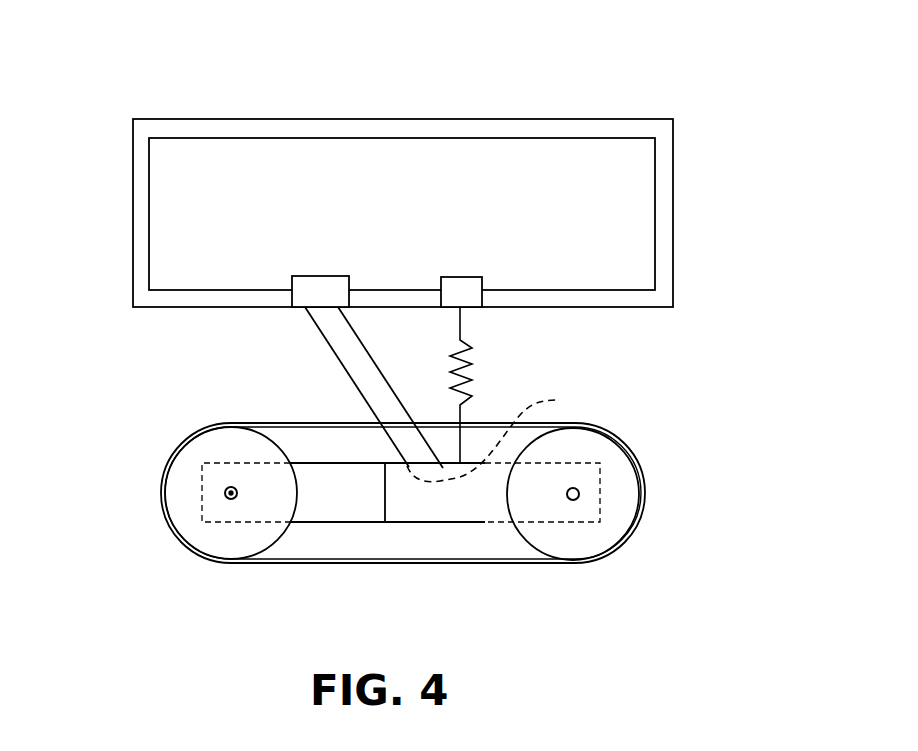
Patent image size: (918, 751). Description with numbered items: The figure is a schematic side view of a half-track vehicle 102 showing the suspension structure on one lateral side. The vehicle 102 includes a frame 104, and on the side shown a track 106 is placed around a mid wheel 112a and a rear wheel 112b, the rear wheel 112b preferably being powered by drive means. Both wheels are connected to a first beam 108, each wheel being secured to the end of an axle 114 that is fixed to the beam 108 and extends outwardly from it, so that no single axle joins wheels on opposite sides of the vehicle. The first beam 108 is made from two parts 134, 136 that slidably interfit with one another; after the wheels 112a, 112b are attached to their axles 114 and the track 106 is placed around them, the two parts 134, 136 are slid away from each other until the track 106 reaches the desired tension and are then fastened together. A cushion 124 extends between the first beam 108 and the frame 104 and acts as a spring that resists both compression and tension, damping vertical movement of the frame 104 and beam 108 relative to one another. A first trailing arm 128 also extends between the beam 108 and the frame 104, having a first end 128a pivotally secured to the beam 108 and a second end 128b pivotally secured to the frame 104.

The half-track vehicle 102 is at (463, 98).
The frame 104 is at (673, 260).
The track 106 is at (243, 423).
The first beam 108 is at (416, 545).
The mid wheel 112a is at (218, 552).
The rear wheel 112b is at (622, 522).
The axle 114 is at (225, 493).
The cushion 124 is at (472, 363).
The first trailing arm 128 is at (343, 378).
The first end 128a is at (515, 435).
The second end 128b is at (303, 310).
The beam part 134 is at (330, 517).
The beam part 136 is at (495, 520).